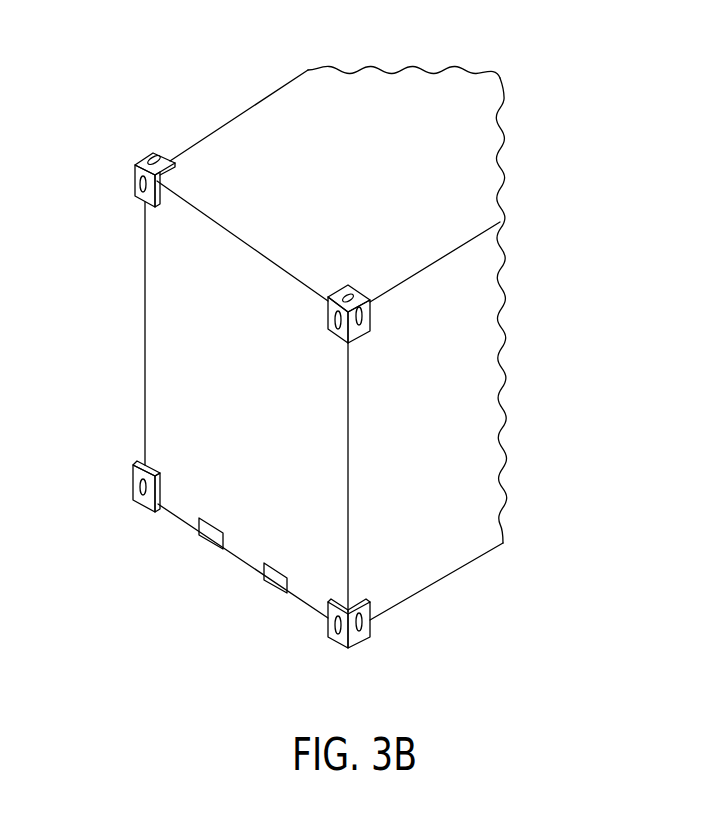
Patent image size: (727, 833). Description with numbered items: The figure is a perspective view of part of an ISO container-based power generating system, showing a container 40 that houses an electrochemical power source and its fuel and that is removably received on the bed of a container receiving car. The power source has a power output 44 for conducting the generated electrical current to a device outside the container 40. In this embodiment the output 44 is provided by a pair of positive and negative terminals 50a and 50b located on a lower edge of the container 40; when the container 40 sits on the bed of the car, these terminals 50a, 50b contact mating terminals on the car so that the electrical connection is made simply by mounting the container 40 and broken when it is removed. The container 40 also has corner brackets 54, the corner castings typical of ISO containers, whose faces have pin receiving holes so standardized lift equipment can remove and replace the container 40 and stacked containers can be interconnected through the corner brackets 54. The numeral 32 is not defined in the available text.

The panel 32 is at (247, 88).
The container 40 is at (449, 558).
The power output 44 is at (222, 578).
The positive terminal 50a is at (210, 537).
The negative terminal 50b is at (275, 588).
The corner brackets 54 is at (138, 161).